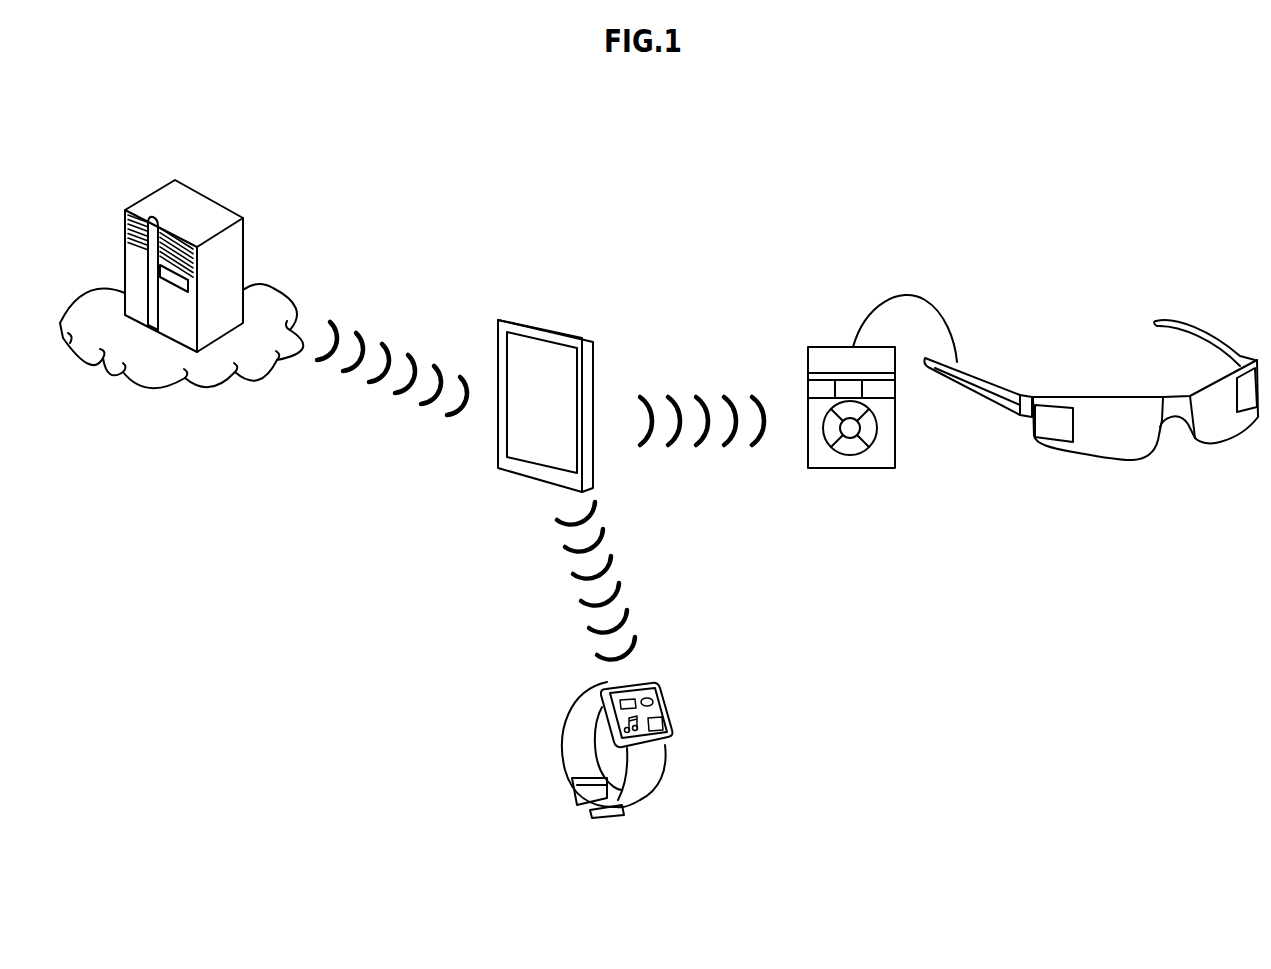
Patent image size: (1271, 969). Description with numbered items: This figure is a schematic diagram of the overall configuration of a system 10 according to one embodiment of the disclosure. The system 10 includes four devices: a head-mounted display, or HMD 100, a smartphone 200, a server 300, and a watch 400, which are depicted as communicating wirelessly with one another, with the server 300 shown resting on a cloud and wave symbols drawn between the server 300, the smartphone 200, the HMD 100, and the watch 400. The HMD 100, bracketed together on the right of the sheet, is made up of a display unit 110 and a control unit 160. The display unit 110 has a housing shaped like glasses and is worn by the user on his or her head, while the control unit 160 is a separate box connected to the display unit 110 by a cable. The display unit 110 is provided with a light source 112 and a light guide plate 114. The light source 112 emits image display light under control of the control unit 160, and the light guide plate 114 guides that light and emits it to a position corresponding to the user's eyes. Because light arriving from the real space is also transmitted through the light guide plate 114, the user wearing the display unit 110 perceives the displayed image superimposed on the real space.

The system 10 is at (742, 152).
The head-mounted display (HMD) 100 is at (1033, 449).
The display unit 110 is at (1091, 421).
The light source 112 is at (1052, 407).
The light guide plate 114 is at (1123, 423).
The control unit 160 is at (863, 468).
The smartphone 200 is at (555, 320).
The server 300 is at (198, 192).
The watch 400 is at (673, 713).